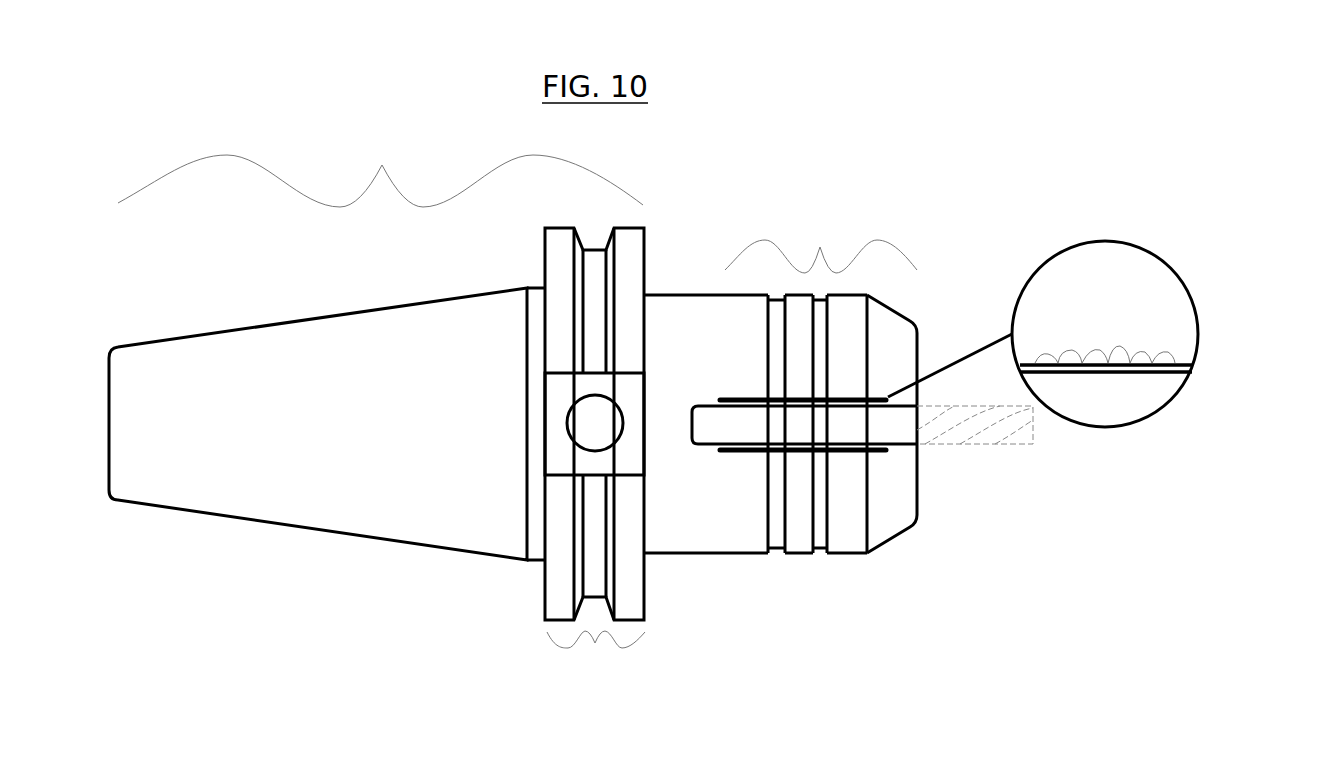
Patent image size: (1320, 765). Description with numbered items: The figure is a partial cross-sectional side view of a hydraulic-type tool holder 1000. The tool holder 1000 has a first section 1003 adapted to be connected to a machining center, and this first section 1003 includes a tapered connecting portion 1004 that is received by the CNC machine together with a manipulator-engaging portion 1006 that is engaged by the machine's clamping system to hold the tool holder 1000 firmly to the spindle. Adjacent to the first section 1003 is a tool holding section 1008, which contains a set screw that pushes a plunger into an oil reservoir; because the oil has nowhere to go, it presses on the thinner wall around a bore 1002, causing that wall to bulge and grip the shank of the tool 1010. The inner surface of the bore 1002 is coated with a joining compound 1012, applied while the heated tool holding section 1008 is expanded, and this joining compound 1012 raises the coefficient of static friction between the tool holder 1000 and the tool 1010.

The tool holder 1000 is at (702, 270).
The bore 1002 is at (832, 414).
The first section 1003 is at (380, 169).
The tapered connecting portion 1004 is at (285, 377).
The manipulator-engaging portion 1006 is at (595, 454).
The tool holding section 1008 is at (821, 382).
The tool 1010 is at (977, 430).
The joining compound 1012 is at (1173, 360).